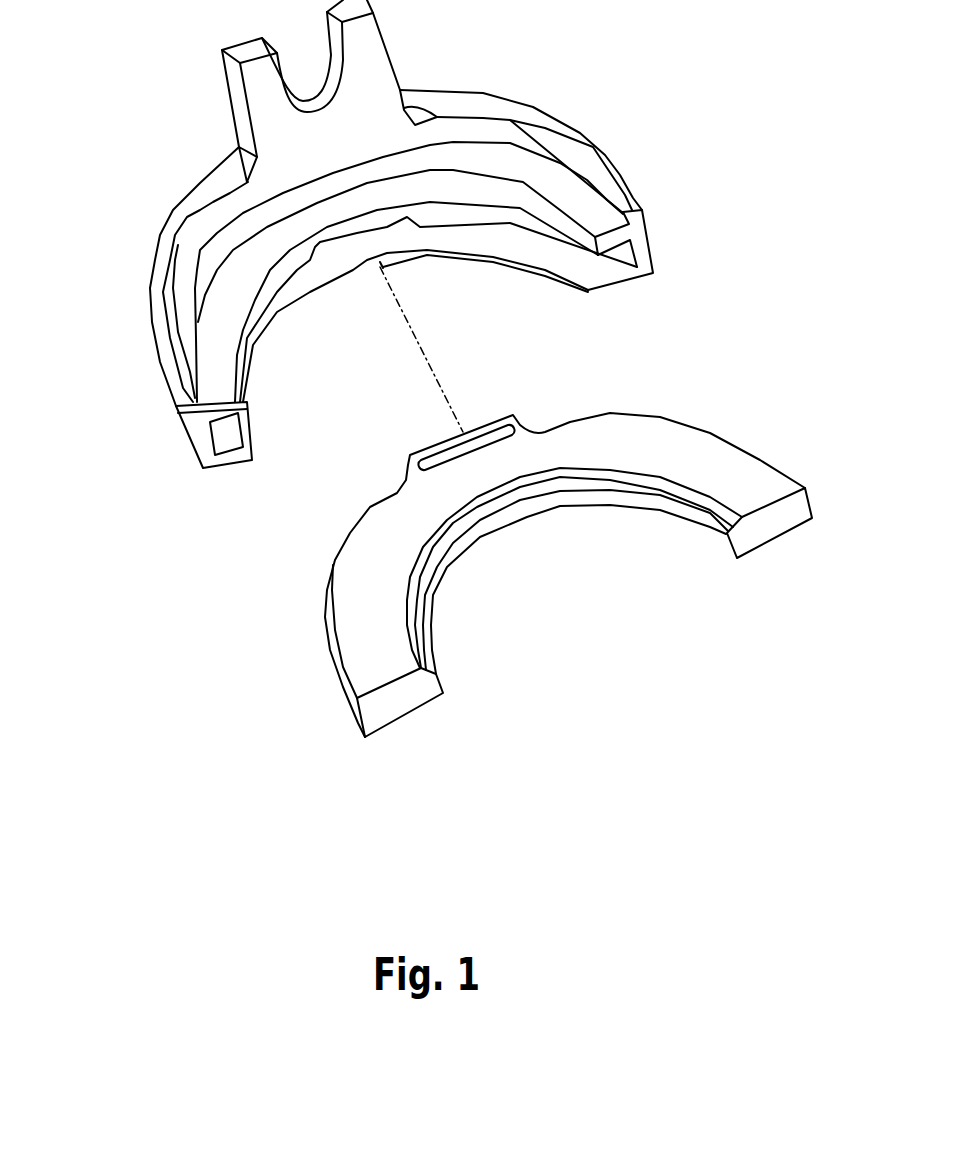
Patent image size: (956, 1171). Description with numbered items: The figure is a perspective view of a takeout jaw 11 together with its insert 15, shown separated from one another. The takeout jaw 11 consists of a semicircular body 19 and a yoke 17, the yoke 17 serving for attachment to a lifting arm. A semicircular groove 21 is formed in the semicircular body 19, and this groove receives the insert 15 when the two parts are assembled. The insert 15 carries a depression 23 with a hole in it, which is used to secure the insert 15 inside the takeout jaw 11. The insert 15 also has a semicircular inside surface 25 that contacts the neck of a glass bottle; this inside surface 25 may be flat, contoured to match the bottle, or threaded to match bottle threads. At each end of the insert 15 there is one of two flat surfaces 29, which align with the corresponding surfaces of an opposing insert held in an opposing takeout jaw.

The takeout jaw 11 is at (530, 112).
The insert 15 is at (662, 443).
The yoke 17 is at (258, 108).
The semicircular body 19 is at (155, 297).
The semicircular groove 21 is at (205, 468).
The depression 23 is at (480, 440).
The semicircular inside surface 25 is at (697, 518).
The flat surfaces 29 is at (773, 517).